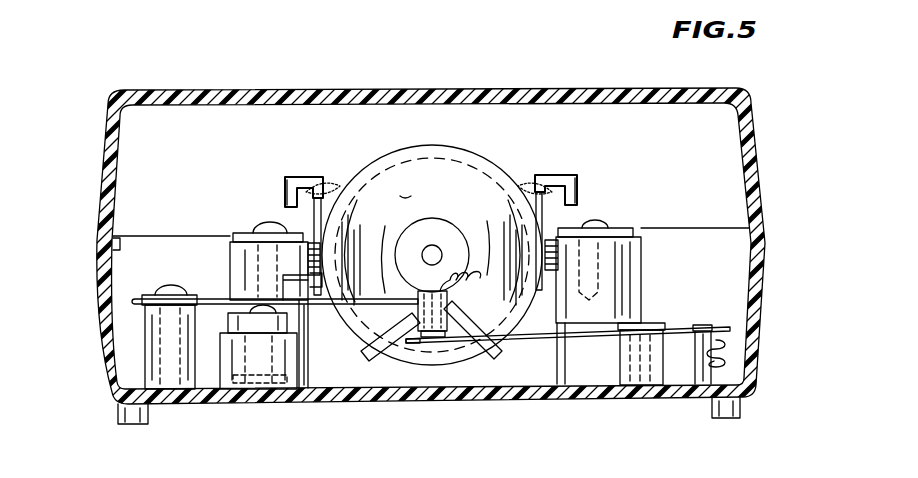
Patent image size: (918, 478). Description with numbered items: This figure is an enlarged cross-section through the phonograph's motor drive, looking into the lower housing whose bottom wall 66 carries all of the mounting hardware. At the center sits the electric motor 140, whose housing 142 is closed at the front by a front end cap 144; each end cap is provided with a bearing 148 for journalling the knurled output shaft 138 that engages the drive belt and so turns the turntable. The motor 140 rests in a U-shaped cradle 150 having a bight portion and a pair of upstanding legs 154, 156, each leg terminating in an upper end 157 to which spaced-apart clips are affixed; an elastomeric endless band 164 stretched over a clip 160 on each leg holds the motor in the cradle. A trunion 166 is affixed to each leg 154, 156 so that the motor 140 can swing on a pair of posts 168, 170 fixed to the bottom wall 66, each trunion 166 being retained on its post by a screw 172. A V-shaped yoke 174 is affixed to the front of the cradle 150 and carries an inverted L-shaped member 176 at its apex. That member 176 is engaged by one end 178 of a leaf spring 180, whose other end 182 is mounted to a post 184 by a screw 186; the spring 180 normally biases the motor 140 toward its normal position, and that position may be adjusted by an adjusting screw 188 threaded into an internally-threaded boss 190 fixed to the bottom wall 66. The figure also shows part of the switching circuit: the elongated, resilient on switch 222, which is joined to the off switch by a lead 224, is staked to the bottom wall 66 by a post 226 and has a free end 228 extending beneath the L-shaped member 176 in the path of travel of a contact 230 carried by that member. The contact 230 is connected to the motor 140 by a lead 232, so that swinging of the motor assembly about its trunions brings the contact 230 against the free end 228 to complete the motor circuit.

The bottom wall portion 66 is at (500, 381).
The knurled output shaft 138 is at (428, 245).
The electric motor 140 is at (404, 196).
The housing 142 is at (472, 139).
The front end cap 144 is at (432, 146).
The bearing 148 is at (445, 226).
The U-shaped cradle 150 is at (586, 183).
The upstanding leg 154 is at (545, 214).
The upstanding leg 156 is at (318, 211).
The upper end 157 is at (323, 177).
The clip 160 is at (290, 177).
The elastomeric endless band 164 is at (336, 178).
The trunion 166 is at (530, 356).
The post 168 is at (642, 272).
The post 170 is at (322, 388).
The screw 172 is at (258, 224).
The V-shaped yoke 174 is at (378, 376).
The inverted L-shaped member 176 is at (447, 303).
The one end 178 is at (392, 246).
The leaf spring 180 is at (378, 348).
The other end 182 is at (133, 300).
The post 184 is at (145, 340).
The screw 186 is at (168, 286).
The adjusting screw 188 is at (262, 384).
The internally-threaded boss 190 is at (207, 384).
The "on" switch 222 is at (578, 342).
The lead 224 is at (730, 351).
The post 226 is at (650, 366).
The free end 228 is at (436, 340).
The contact 230 is at (409, 346).
The lead 232 is at (487, 236).